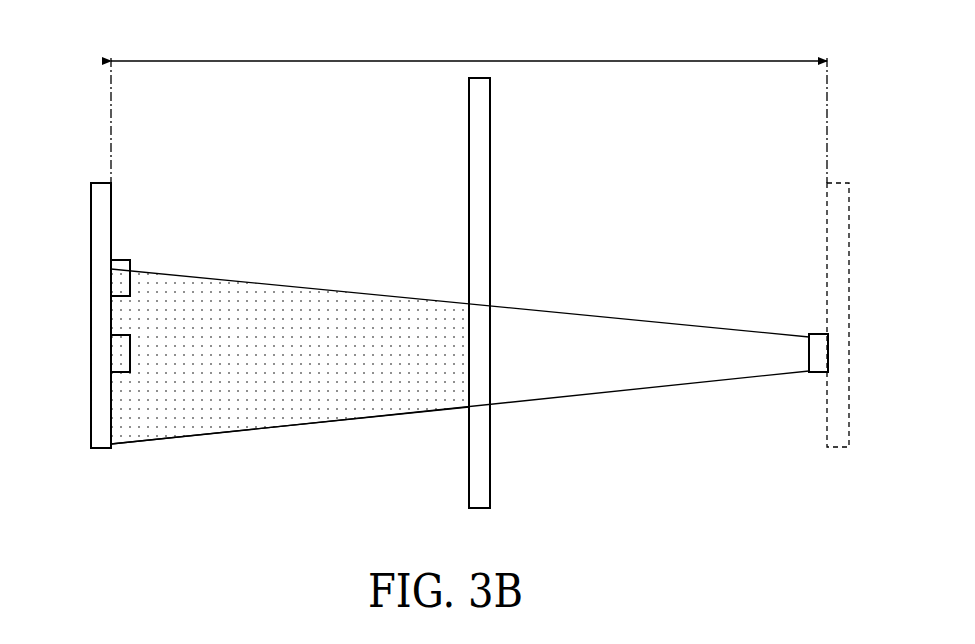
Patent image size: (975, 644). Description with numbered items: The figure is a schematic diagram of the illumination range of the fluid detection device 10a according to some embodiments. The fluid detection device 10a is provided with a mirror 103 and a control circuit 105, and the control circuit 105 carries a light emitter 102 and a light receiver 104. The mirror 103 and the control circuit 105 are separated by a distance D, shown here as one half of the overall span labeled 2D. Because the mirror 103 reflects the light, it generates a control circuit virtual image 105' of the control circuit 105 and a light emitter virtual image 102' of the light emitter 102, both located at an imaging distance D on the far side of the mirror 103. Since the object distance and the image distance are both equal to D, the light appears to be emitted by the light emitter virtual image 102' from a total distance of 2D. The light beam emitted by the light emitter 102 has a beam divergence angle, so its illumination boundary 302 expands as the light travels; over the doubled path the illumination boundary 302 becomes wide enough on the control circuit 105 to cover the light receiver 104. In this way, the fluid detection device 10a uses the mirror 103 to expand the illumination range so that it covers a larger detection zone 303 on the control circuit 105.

The fluid detection device 10a is at (67, 98).
The distance 2D is at (469, 45).
The light emitter 102 is at (73, 353).
The light emitter virtual image 102' is at (872, 353).
The mirror 103 is at (483, 134).
The light receiver 104 is at (120, 282).
The control circuit 105 is at (64, 315).
The control circuit virtual image 105' is at (881, 315).
The illumination boundary 302 is at (288, 283).
The detection zone 303 is at (222, 427).